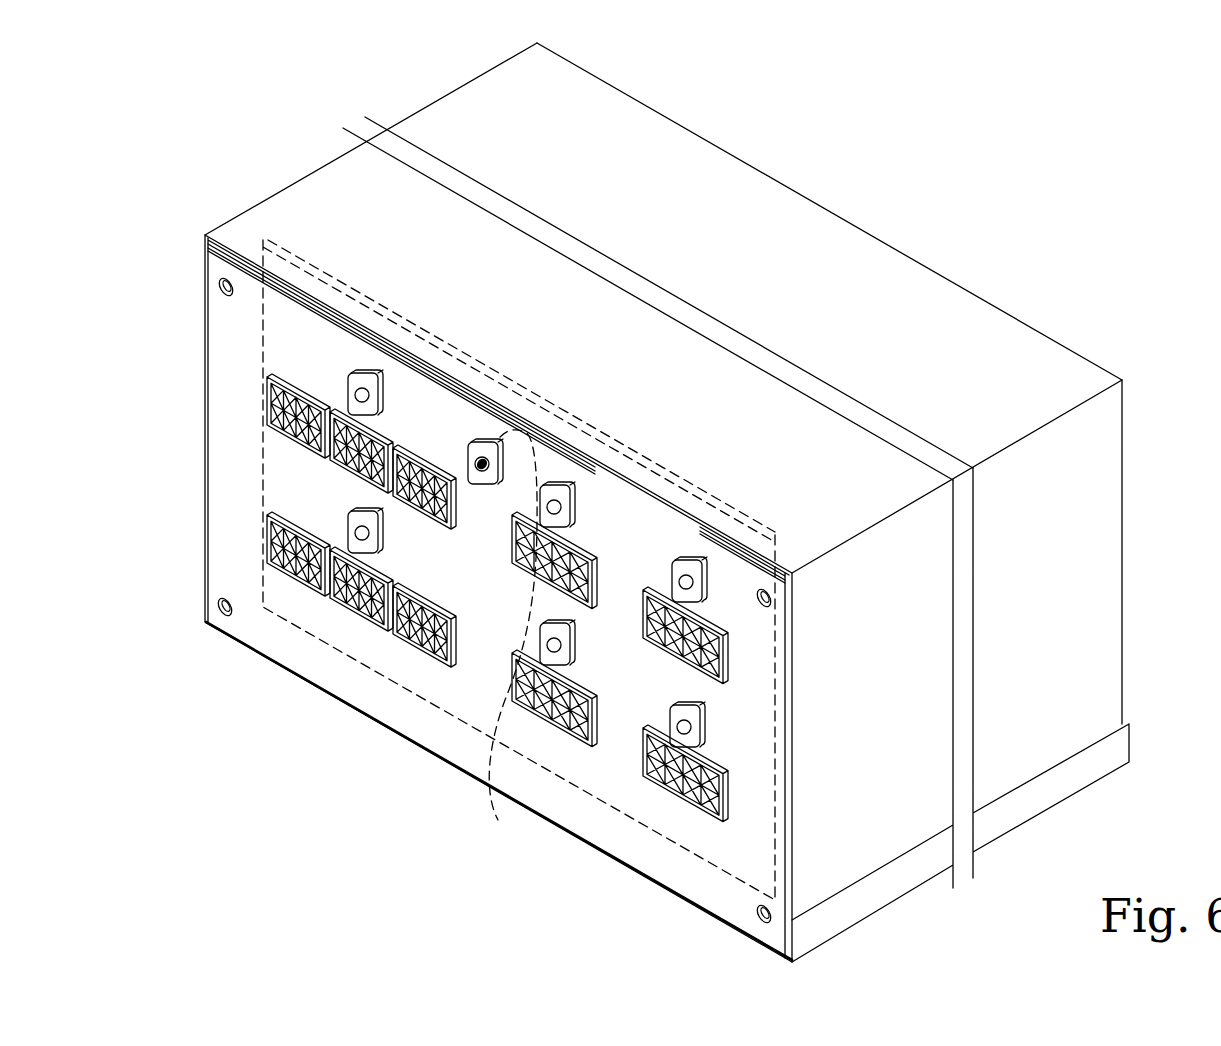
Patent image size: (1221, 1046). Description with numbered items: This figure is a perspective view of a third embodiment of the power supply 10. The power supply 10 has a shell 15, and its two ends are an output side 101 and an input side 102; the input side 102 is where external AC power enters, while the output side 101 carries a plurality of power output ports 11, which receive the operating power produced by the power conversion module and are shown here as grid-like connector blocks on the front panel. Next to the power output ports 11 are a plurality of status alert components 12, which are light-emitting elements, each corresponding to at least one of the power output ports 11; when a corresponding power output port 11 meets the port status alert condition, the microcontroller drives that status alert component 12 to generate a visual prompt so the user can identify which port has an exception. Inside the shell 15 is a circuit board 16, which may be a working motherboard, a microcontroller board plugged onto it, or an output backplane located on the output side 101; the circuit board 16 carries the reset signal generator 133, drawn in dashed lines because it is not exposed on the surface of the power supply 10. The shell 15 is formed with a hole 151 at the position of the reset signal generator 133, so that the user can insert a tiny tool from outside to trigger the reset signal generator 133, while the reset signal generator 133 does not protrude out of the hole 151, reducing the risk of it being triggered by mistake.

The power supply 10 is at (1143, 193).
The output side 101 is at (198, 513).
The input side 102 is at (829, 205).
The power output port 11 is at (365, 617).
The status alert component 12 is at (360, 395).
The reset signal generator 133 is at (510, 644).
The shell 15 is at (1063, 360).
The hole 151 is at (478, 474).
The circuit board 16 is at (263, 313).